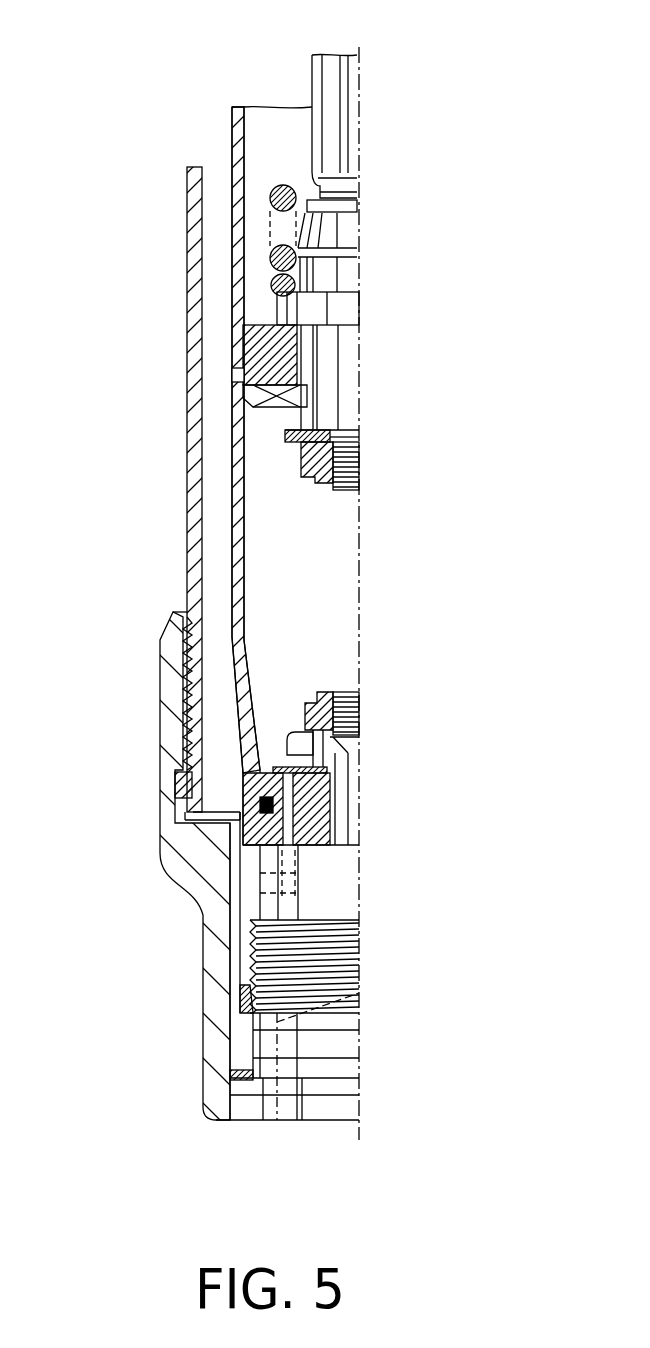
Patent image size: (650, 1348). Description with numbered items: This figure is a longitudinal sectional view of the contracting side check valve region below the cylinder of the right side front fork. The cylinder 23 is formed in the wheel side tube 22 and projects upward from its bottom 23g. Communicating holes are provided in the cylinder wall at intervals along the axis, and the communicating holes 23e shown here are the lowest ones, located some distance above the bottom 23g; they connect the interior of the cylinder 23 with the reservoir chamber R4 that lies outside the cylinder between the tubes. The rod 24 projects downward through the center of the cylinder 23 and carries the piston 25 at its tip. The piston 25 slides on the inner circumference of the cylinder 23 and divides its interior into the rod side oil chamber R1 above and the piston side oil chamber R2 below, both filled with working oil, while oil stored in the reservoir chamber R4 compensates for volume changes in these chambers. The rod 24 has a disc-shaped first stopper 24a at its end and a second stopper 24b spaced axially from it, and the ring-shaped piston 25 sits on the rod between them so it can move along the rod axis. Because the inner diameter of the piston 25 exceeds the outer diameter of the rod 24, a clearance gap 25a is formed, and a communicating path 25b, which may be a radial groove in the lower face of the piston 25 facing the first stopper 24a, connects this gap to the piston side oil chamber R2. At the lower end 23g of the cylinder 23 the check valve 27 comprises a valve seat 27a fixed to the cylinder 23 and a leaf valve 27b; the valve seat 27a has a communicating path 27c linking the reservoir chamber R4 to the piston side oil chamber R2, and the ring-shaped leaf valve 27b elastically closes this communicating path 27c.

The wheel side tube 22 is at (193, 202).
The cylinder 23 is at (237, 130).
The communicating holes 23e is at (242, 377).
The bottom of cylinder 23g is at (252, 983).
The rod 24 is at (327, 75).
The first stopper 24a is at (292, 443).
The second stopper 24b is at (317, 310).
The piston 25 is at (258, 311).
The clearance gap 25a is at (305, 365).
The communicating path 25b is at (253, 400).
The check valve 27 is at (266, 764).
The valve seat 27a is at (330, 810).
The leaf valve 27b is at (275, 770).
The communicating path 27c is at (290, 830).
The rod side oil chamber R1 is at (277, 122).
The piston side oil chamber R2 is at (333, 640).
The reservoir chamber R4 is at (212, 527).